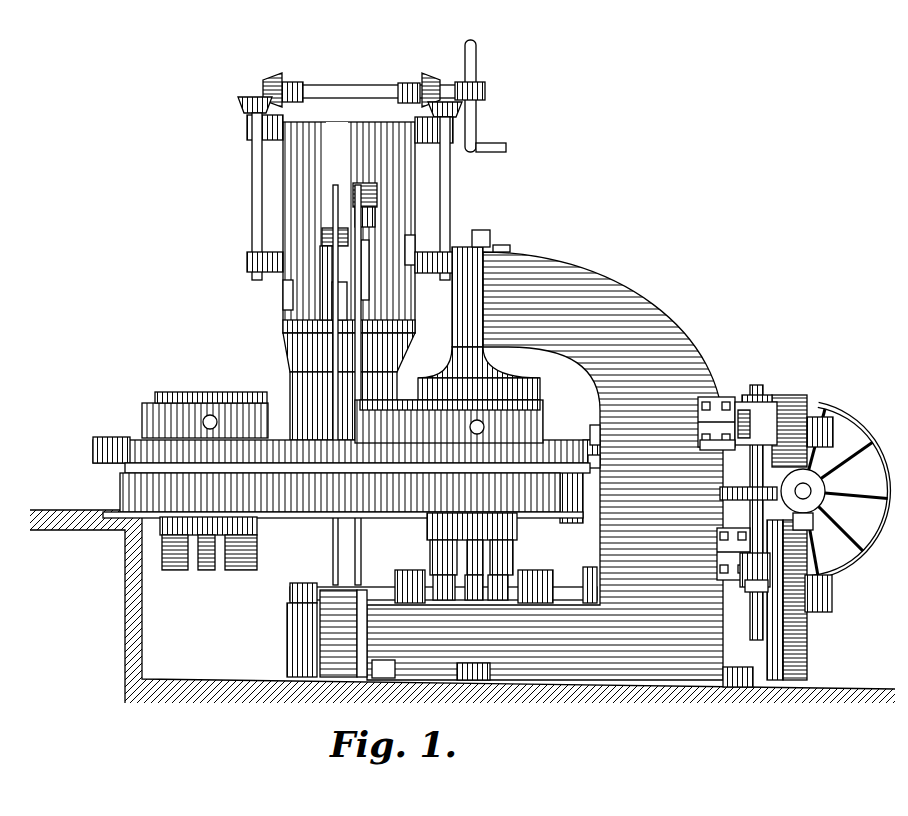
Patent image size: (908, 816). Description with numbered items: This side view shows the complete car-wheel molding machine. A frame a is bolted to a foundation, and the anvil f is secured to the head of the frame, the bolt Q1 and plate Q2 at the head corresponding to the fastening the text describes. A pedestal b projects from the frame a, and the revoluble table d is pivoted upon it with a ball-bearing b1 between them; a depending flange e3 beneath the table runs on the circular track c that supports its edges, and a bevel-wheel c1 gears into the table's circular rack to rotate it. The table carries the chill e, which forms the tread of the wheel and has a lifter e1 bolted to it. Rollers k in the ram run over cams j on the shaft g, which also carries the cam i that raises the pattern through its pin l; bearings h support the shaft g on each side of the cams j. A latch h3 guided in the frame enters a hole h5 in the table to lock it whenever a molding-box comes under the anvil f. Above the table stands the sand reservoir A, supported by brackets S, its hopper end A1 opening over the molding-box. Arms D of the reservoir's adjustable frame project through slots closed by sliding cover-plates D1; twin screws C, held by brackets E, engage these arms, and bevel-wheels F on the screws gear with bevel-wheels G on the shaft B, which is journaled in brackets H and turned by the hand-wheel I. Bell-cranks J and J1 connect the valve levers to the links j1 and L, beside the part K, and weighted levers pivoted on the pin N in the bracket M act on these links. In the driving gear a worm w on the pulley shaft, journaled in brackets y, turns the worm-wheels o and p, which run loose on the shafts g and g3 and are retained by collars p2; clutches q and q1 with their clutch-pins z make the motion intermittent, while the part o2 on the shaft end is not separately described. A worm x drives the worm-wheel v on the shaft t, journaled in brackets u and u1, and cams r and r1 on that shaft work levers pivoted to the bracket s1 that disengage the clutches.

The reservoir A is at (349, 227).
The cylinder neck A1 is at (349, 386).
The shaft B is at (350, 85).
The twin screws C is at (252, 162).
The arms D is at (265, 272).
The cover-plates D1 is at (284, 297).
The brackets E is at (247, 128).
The bevel-wheels F is at (240, 100).
The bevel-wheels G is at (268, 75).
The brackets H is at (292, 82).
The hand-wheel I is at (478, 66).
The bell-crank J is at (364, 183).
The bell-crank J1 is at (326, 240).
The inner bracket K is at (321, 284).
The link L is at (333, 300).
The inner rod j1 is at (369, 290).
The bolt Q1 is at (490, 235).
The plate Q2 is at (510, 248).
The anvil f is at (479, 323).
The frame a is at (511, 466).
The chill e is at (342, 421).
The lifter e1 is at (185, 393).
The flange e3 is at (123, 473).
The revoluble table d is at (341, 452).
The circular track c is at (343, 495).
The hole h5 is at (95, 447).
The latch h3 is at (600, 461).
The shaft g3 is at (595, 437).
The rollers k is at (178, 570).
The pin l is at (206, 570).
The pin N is at (290, 593).
The shaft g is at (570, 587).
The bearings h is at (412, 603).
The cams j is at (442, 600).
The cam i is at (472, 600).
The bevel-wheel c1 is at (588, 567).
The pedestal b is at (302, 640).
The bracket M is at (343, 633).
The ball-bearing b1 is at (395, 670).
The clutch q1 is at (790, 395).
The worm-wheel o is at (807, 630).
The clutch q is at (780, 625).
The hub o2 is at (832, 593).
The worm-wheel p is at (842, 404).
The collar p2 is at (833, 430).
The worm w is at (820, 476).
The brackets y is at (826, 492).
The worm x is at (812, 522).
The clutch-pin z is at (770, 390).
The shaft t is at (757, 395).
The bracket s1 is at (712, 397).
The cam r is at (745, 402).
The bracket u1 is at (710, 450).
The worm-wheel v is at (720, 492).
The bracket u is at (717, 533).
The brackets S is at (740, 582).
The cam r1 is at (748, 590).